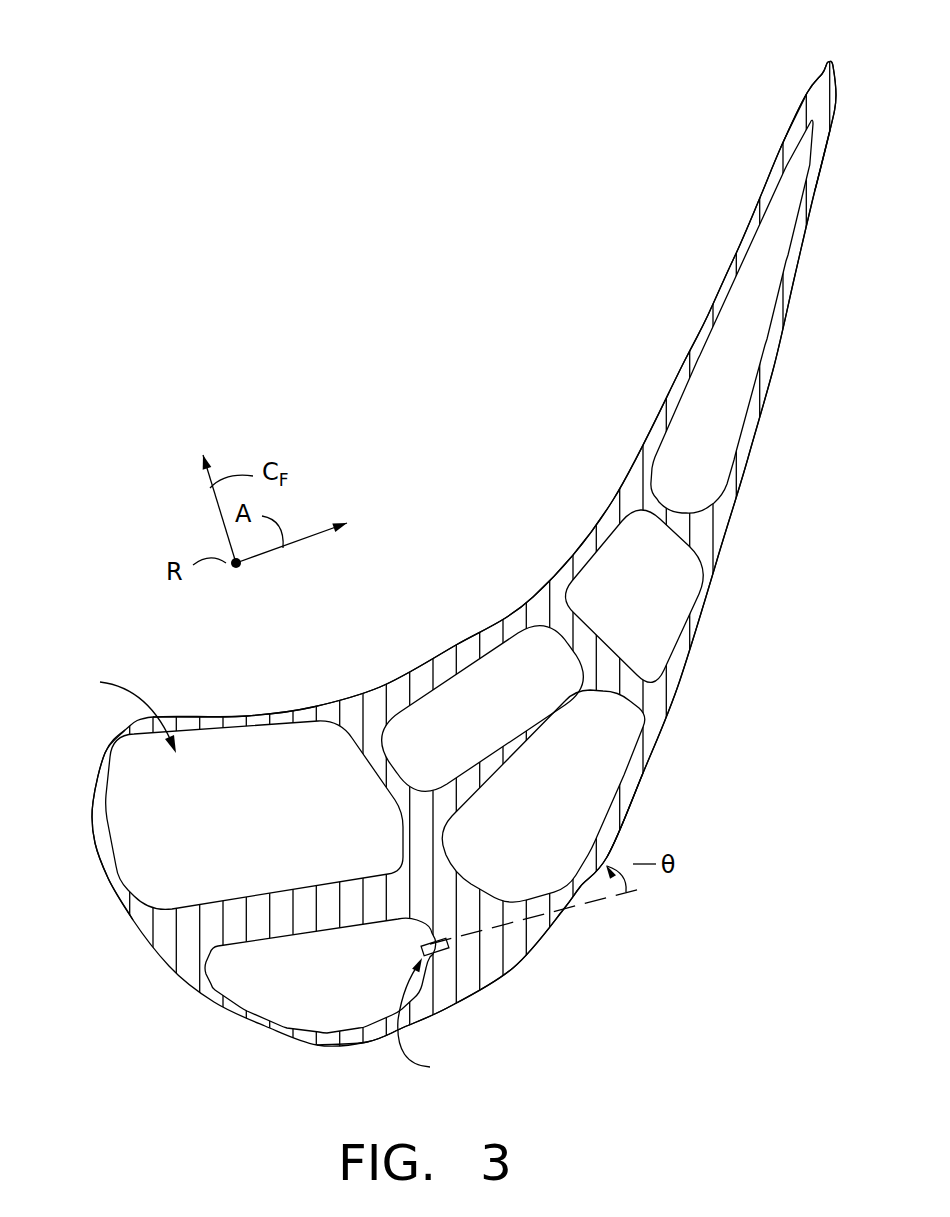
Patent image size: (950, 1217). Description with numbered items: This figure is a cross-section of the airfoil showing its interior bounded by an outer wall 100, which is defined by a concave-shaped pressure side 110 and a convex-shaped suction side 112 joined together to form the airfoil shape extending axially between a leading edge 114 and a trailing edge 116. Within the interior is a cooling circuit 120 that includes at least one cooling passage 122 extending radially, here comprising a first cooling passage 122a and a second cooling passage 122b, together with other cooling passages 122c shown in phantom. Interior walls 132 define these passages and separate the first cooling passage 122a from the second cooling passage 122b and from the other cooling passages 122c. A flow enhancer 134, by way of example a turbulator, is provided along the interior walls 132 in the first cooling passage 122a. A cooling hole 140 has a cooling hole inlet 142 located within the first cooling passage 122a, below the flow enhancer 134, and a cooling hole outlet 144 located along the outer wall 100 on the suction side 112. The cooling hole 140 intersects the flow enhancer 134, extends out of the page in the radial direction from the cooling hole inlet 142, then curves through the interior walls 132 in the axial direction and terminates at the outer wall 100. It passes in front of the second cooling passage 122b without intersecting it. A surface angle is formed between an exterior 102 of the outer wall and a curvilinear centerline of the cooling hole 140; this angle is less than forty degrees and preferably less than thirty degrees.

The outer wall 100 is at (697, 528).
The exterior 102 is at (632, 808).
The pressure side 110 is at (531, 596).
The suction side 112 is at (690, 680).
The leading edge 114 is at (190, 982).
The trailing edge 116 is at (838, 60).
The cooling circuit 120 is at (110, 711).
The cooling passage 122 is at (345, 768).
The first cooling passage 122a is at (320, 975).
The second cooling passage 122b is at (543, 796).
The other cooling passages 122c is at (689, 401).
The interior walls 132 is at (490, 778).
The flow enhancer 134 is at (446, 958).
The cooling hole 140 is at (513, 930).
The cooling hole inlet 142 is at (441, 1019).
The cooling hole outlet 144 is at (563, 921).